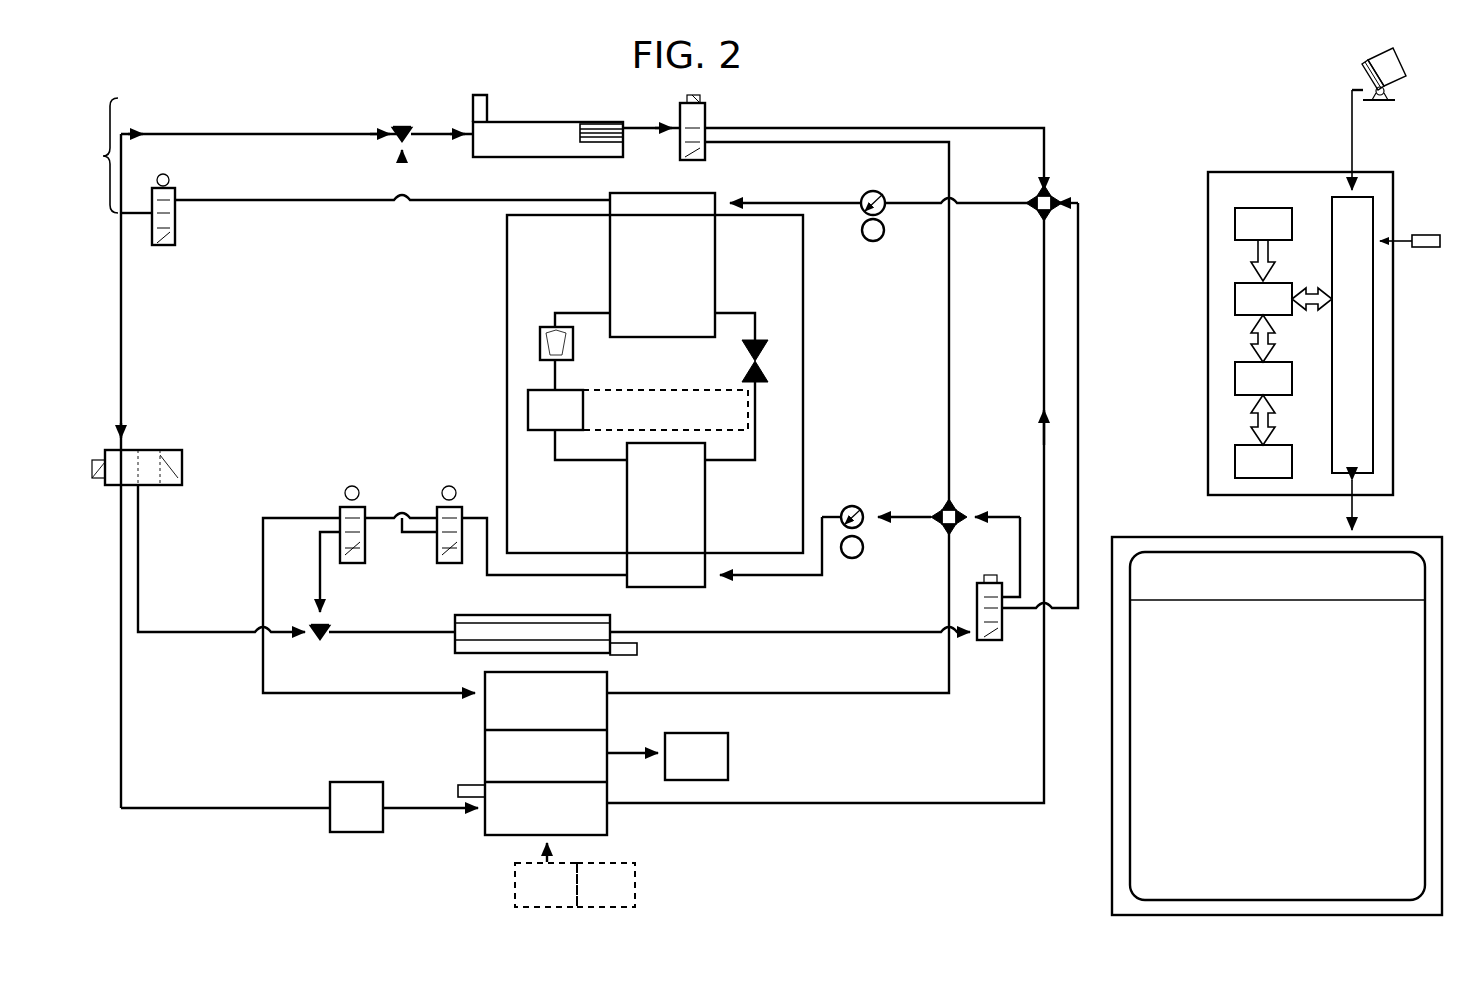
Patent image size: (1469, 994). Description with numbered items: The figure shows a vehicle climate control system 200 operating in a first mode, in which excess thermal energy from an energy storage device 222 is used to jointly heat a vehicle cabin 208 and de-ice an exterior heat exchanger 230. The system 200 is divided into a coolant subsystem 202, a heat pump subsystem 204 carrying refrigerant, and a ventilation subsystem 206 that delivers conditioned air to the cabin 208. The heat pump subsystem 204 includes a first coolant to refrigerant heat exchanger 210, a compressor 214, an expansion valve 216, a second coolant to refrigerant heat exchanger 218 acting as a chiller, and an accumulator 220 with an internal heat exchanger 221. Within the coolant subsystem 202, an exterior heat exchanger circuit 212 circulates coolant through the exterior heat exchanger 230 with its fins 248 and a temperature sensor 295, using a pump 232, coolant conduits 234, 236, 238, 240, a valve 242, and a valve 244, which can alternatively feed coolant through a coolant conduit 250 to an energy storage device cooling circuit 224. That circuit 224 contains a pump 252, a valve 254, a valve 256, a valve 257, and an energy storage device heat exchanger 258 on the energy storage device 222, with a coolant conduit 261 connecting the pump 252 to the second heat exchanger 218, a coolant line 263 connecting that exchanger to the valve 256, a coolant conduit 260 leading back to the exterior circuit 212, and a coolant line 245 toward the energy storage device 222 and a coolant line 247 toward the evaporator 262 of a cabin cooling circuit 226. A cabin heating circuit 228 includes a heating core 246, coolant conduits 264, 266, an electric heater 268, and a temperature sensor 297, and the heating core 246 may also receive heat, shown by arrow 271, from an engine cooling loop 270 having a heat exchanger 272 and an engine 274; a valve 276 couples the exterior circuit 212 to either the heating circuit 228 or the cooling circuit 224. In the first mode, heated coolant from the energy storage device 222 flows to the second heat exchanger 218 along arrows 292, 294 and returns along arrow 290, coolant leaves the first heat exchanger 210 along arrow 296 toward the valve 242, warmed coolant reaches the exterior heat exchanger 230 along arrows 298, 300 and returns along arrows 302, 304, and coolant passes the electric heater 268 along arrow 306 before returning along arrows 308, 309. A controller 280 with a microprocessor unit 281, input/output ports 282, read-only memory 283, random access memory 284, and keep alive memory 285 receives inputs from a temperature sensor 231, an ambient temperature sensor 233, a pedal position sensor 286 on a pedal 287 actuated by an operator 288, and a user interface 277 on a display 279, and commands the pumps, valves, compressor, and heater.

The climate control system 200 is at (168, 88).
The coolant subsystem 202 is at (1088, 455).
The heat pump subsystem 204 is at (828, 238).
The ventilation subsystem 206 is at (546, 753).
The vehicle cabin 208 is at (667, 756).
The first coolant to refrigerant heat exchanger 210 is at (662, 265).
The exterior heat exchanger circuit 212 is at (93, 155).
The compressor 214 is at (538, 336).
The expansion valve 216 is at (740, 355).
The second coolant to refrigerant heat exchanger 218 is at (666, 515).
The accumulator 220 is at (568, 390).
The internal heat exchanger 221 is at (628, 390).
The energy storage device 222 is at (460, 617).
The energy storage device cooling circuit 224 is at (316, 582).
The cabin cooling circuit 226 is at (212, 675).
The cabin heating circuit 228 is at (116, 745).
The exterior heat exchanger 230 is at (517, 139).
The temperature sensor 231 is at (640, 649).
The pump 232 is at (892, 236).
The ambient temperature sensor 233 is at (1426, 235).
The coolant conduit 234 is at (290, 132).
The coolant conduit 236 is at (888, 127).
The coolant conduit 238 is at (986, 202).
The coolant conduit 240 is at (290, 198).
The valve 242 is at (190, 243).
The valve 244 is at (718, 155).
The coolant line 245 is at (392, 632).
The heating core 246 is at (483, 823).
The coolant line 247 is at (342, 692).
The fins 248 is at (603, 124).
The coolant conduit 250 is at (950, 360).
The pump 252 is at (875, 548).
The valve 254 is at (1005, 648).
The valve 256 is at (449, 484).
The valve 257 is at (352, 484).
The energy storage device heat exchanger 258 is at (470, 647).
The coolant conduit 260 is at (1080, 518).
The coolant conduit 261 is at (742, 577).
The evaporator 262 is at (483, 715).
The coolant line 263 is at (518, 577).
The coolant conduit 264 is at (226, 806).
The coolant conduit 266 is at (858, 802).
The electric heater 268 is at (356, 781).
The engine cooling loop 270 is at (508, 887).
The arrow 271 is at (547, 857).
The heat exchanger 272 is at (546, 885).
The engine 274 is at (606, 885).
The valve 276 is at (158, 437).
The user interface 277 is at (1175, 552).
The display 279 is at (1115, 537).
The controller 280 is at (1216, 172).
The microprocessor unit 281 is at (1281, 283).
The input/output ports 282 is at (1332, 228).
The read-only memory 283 is at (1240, 208).
The random access memory 284 is at (1281, 362).
The keep alive memory 285 is at (1281, 445).
The pedal position sensor 286 is at (1390, 93).
The pedal 287 is at (1362, 72).
The operator 288 is at (1398, 58).
The arrow 290 is at (352, 616).
The arrow 292 is at (758, 628).
The arrow 294 is at (990, 530).
The temperature sensor 295 is at (478, 95).
The arrow 296 is at (460, 177).
The temperature sensor 297 is at (456, 790).
The arrow 298 is at (130, 175).
The arrow 300 is at (420, 122).
The arrow 302 is at (825, 113).
The arrow 304 is at (1031, 153).
The arrow 306 is at (148, 790).
The arrow 308 is at (975, 788).
The arrow 309 is at (1038, 438).